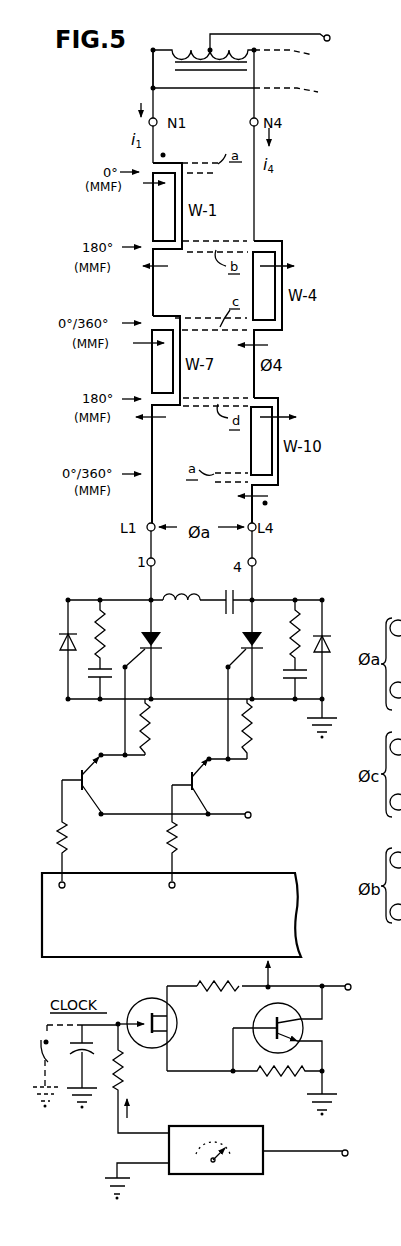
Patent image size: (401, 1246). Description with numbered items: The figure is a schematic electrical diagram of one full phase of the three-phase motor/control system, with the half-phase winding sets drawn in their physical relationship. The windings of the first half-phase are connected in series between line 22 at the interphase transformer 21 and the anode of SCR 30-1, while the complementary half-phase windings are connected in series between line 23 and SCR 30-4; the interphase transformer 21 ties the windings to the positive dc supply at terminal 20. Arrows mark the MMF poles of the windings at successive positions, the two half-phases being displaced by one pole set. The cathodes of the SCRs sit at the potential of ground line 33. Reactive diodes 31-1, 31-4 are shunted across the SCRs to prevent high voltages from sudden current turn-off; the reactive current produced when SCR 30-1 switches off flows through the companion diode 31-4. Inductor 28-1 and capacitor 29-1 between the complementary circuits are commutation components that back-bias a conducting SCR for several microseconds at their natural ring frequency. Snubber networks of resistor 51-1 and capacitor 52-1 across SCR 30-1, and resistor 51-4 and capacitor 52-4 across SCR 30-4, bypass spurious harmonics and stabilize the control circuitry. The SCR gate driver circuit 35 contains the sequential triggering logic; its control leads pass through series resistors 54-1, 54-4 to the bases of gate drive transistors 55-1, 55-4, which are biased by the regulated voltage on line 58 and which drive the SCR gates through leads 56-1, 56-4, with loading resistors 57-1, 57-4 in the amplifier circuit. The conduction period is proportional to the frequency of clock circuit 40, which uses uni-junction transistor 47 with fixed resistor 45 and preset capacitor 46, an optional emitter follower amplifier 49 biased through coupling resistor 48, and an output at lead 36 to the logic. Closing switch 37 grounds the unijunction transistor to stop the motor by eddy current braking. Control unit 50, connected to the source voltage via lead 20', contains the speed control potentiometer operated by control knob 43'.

The positive dc supply terminal 20 is at (340, 51).
The interphase transformer 21 is at (203, 50).
The line 22 is at (320, 97).
The line 23 is at (292, 58).
The inductor 28-1 is at (178, 586).
The capacitor 29-1 is at (224, 596).
The SCR 30-1 is at (157, 643).
The SCR 30-4 is at (244, 641).
The reactive diode 31-1 is at (62, 634).
The reactive diode 31-4 is at (343, 635).
The ground line 33 is at (177, 702).
The SCR gate driver circuit 35 is at (185, 924).
The output lead 36 is at (271, 975).
The switch 37 is at (52, 1066).
The clock circuit 40 is at (212, 1057).
The control knob 43' is at (227, 1172).
The resistor 45 is at (141, 1078).
The capacitor 46 is at (85, 1067).
The uni-junction transistor 47 is at (149, 1001).
The coupling resistor 48 is at (213, 995).
The emitter follower amplifier 49 is at (263, 1008).
The control unit 50 is at (264, 1136).
The resistor 51-1 is at (104, 646).
The resistor 51-4 is at (293, 640).
The capacitor 52-1 is at (88, 673).
The capacitor 52-4 is at (295, 673).
The series resistor 54-1 is at (66, 851).
The series resistor 54-4 is at (176, 851).
The gate drive amplifier 55-1 is at (85, 770).
The gate drive amplifier 55-4 is at (191, 775).
The lead 56-1 is at (122, 712).
The lead 56-4 is at (223, 713).
The loading resistor 57-1 is at (150, 729).
The loading resistor 57-4 is at (250, 740).
The line 58 is at (231, 813).
The lead 20' is at (322, 1163).